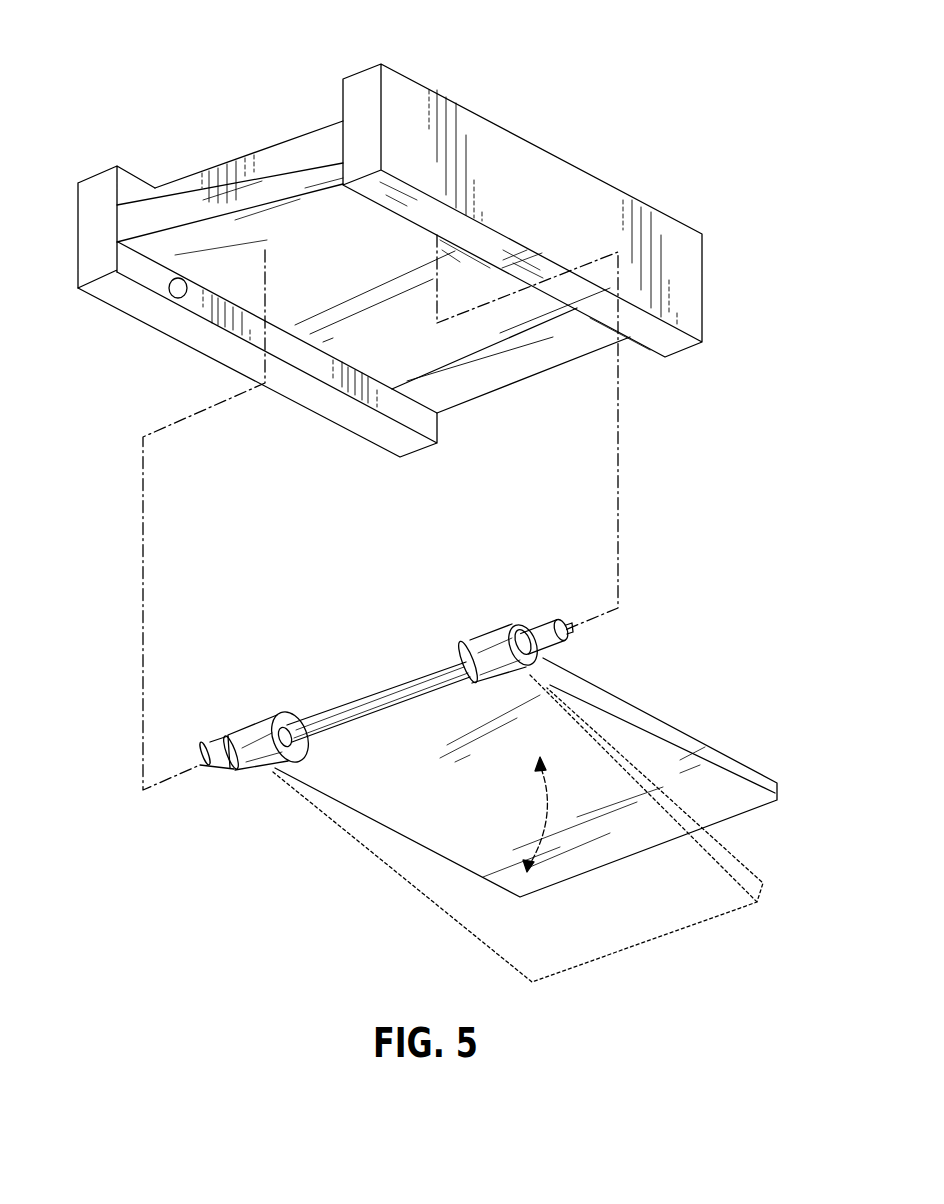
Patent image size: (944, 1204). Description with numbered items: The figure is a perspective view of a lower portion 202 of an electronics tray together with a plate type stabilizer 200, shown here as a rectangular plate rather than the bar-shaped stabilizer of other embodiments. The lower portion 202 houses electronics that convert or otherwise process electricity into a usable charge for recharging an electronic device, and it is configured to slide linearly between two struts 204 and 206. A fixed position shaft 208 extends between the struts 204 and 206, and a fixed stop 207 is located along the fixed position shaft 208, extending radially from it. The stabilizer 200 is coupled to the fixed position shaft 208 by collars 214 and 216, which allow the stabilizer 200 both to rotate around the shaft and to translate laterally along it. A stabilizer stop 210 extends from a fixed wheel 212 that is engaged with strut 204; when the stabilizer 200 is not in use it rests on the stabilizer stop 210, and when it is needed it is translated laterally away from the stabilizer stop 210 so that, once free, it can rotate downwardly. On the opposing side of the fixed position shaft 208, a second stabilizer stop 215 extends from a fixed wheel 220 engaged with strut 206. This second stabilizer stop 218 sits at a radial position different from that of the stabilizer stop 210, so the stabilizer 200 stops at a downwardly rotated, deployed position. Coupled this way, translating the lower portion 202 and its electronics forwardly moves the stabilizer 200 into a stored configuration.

The stabilizer 200 is at (726, 679).
The lower portion 202 is at (424, 401).
The strut 204 is at (410, 88).
The strut 206 is at (97, 187).
The fixed stop 207 is at (572, 634).
The fixed position shaft 208 is at (417, 672).
The stabilizer stop 210 is at (540, 611).
The fixed wheel 212 is at (490, 628).
The collar 214 is at (523, 617).
The second stabilizer stop 215 is at (212, 741).
The collar 216 is at (240, 733).
The second stabilizer stop 218 is at (207, 777).
The fixed wheel 220 is at (275, 712).